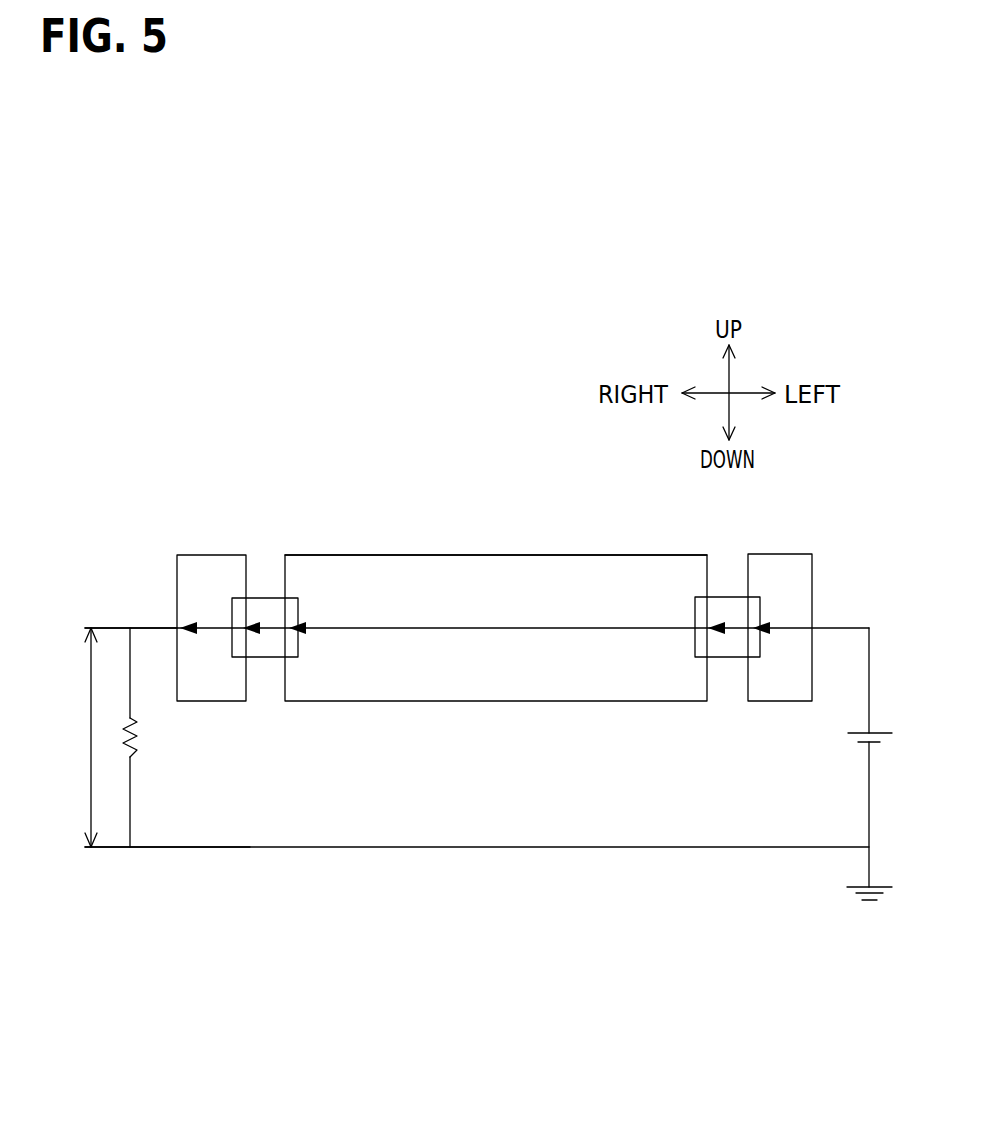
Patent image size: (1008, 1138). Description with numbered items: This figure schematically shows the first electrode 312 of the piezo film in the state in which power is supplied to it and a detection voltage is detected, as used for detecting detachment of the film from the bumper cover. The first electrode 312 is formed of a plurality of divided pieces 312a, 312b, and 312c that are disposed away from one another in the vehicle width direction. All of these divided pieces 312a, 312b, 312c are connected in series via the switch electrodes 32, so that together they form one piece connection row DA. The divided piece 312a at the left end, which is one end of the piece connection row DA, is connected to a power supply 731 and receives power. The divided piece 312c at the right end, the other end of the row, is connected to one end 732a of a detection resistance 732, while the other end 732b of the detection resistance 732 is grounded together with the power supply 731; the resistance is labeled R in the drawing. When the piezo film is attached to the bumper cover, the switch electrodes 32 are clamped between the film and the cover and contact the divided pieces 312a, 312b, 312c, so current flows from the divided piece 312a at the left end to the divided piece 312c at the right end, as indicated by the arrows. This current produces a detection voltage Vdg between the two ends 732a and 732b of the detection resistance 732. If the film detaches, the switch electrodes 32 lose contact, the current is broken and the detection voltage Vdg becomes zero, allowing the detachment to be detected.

The first electrode 312 is at (392, 552).
The divided piece 312a is at (812, 553).
The divided piece 312b is at (552, 553).
The divided piece 312c is at (210, 553).
The switch electrode 32 is at (262, 658).
The power supply 731 is at (855, 752).
The detection resistance 732 is at (175, 765).
The one end of detection resistance 732a is at (131, 665).
The other end of detection resistance 732b is at (130, 800).
The piece connection row DA is at (429, 407).
The resistor R is at (157, 743).
The detection voltage Vdg is at (66, 737).